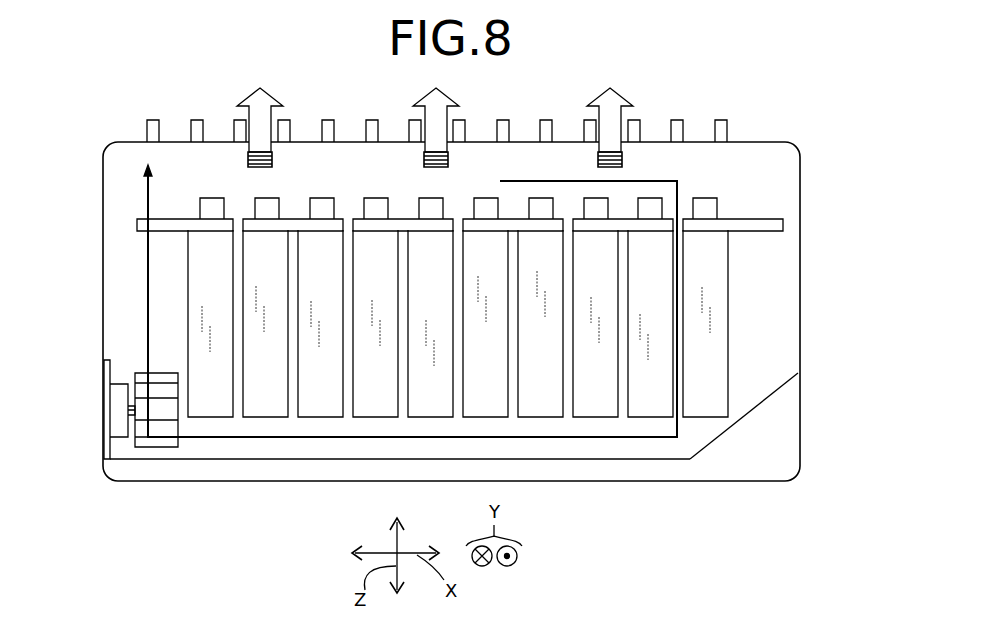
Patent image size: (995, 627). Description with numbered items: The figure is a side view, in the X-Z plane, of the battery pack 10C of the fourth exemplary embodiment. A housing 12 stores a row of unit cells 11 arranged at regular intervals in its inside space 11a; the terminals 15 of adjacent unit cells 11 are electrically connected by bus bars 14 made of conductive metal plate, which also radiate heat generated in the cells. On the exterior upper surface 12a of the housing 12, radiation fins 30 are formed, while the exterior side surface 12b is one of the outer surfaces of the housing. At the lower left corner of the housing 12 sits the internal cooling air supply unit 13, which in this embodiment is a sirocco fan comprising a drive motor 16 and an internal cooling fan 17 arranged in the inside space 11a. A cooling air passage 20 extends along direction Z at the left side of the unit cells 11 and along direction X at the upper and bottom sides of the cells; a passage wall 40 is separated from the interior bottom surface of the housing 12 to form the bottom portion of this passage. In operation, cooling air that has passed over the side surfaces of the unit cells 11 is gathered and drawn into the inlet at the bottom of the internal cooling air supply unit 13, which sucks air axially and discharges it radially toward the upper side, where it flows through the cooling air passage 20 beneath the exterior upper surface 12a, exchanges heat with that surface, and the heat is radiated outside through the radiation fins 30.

The battery pack 10C is at (763, 130).
The unit cells 11 is at (728, 333).
The inside space 11a is at (650, 455).
The housing 12 is at (810, 208).
The exterior upper surface 12a is at (766, 143).
The exterior side surface 12b is at (103, 342).
The internal cooling air supply unit 13 is at (190, 446).
The bus bars 14 is at (166, 224).
The terminals 15 is at (200, 208).
The drive motor 16 is at (117, 418).
The internal cooling fan 17 is at (160, 430).
The cooling air passage 20 is at (148, 317).
The radiation fins 30 is at (688, 113).
The passage wall 40 is at (706, 452).